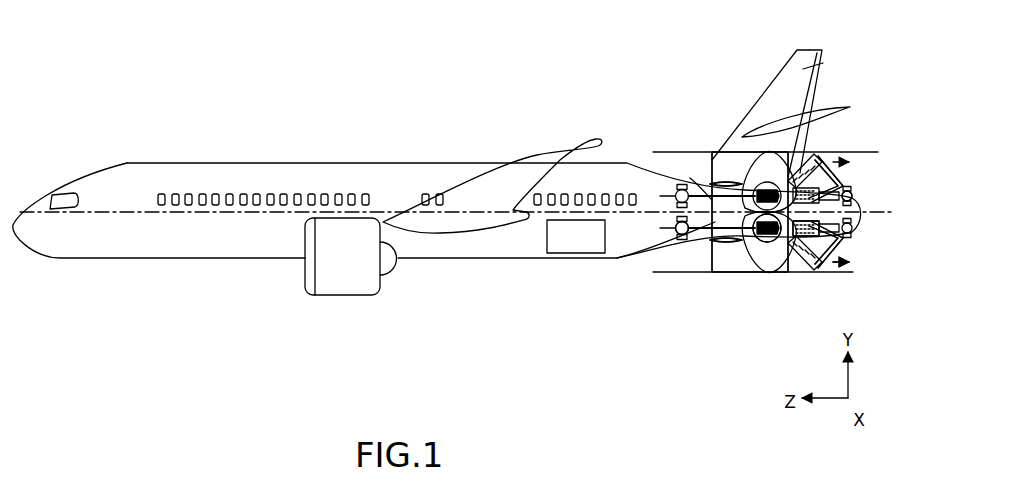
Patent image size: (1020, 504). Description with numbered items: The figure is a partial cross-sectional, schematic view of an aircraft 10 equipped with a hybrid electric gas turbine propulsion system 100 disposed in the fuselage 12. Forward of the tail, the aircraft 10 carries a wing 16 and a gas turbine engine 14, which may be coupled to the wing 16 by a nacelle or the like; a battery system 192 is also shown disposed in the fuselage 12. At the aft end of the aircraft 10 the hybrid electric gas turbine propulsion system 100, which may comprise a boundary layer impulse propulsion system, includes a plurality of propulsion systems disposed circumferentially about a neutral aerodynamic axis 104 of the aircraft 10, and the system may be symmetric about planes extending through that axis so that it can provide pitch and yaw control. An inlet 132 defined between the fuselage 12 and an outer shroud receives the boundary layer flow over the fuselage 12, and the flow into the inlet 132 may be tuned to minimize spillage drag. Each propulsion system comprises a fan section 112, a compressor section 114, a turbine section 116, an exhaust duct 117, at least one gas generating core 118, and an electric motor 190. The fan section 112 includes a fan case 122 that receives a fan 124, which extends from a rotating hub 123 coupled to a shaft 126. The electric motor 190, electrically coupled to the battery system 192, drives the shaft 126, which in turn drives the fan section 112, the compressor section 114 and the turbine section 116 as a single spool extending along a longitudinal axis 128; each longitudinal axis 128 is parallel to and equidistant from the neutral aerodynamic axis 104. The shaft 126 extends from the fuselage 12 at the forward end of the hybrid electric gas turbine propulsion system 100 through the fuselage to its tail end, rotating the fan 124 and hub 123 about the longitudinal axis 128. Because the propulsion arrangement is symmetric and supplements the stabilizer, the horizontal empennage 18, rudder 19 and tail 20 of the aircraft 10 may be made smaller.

The aircraft 10 is at (140, 87).
The fuselage 12 is at (437, 210).
The gas turbine engine 14 is at (345, 278).
The wing 16 is at (460, 222).
The horizontal empennage 18 is at (813, 120).
The rudder 19 is at (823, 53).
The tail 20 is at (826, 63).
The hybrid electric gas turbine propulsion system 100 is at (690, 166).
The neutral aerodynamic axis 104 is at (850, 262).
The fan section 112 is at (730, 256).
The compressor section 114 is at (833, 243).
The turbine section 116 is at (770, 252).
The exhaust duct 117 is at (836, 166).
The gas generating core 118 is at (815, 239).
The fan case 122 is at (723, 178).
The rotating hub 123 is at (697, 178).
The fan 124 is at (733, 178).
The shaft 126 is at (705, 243).
The longitudinal axis 128 is at (855, 196).
The inlet 132 is at (663, 257).
The electric motor 190 is at (683, 237).
The battery system 192 is at (576, 236).